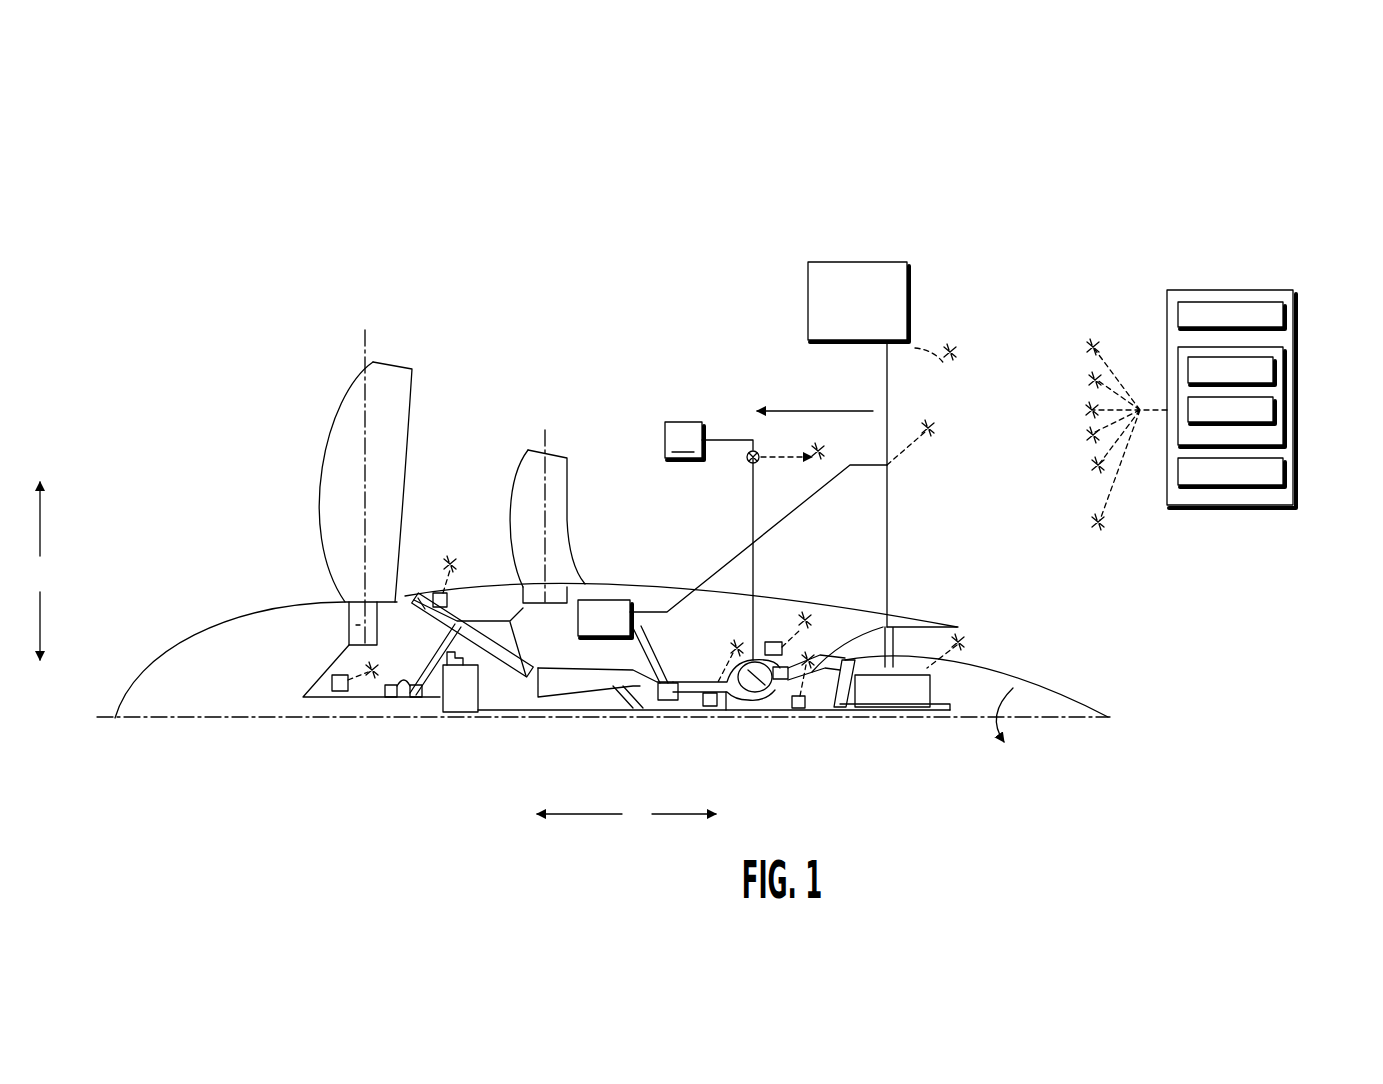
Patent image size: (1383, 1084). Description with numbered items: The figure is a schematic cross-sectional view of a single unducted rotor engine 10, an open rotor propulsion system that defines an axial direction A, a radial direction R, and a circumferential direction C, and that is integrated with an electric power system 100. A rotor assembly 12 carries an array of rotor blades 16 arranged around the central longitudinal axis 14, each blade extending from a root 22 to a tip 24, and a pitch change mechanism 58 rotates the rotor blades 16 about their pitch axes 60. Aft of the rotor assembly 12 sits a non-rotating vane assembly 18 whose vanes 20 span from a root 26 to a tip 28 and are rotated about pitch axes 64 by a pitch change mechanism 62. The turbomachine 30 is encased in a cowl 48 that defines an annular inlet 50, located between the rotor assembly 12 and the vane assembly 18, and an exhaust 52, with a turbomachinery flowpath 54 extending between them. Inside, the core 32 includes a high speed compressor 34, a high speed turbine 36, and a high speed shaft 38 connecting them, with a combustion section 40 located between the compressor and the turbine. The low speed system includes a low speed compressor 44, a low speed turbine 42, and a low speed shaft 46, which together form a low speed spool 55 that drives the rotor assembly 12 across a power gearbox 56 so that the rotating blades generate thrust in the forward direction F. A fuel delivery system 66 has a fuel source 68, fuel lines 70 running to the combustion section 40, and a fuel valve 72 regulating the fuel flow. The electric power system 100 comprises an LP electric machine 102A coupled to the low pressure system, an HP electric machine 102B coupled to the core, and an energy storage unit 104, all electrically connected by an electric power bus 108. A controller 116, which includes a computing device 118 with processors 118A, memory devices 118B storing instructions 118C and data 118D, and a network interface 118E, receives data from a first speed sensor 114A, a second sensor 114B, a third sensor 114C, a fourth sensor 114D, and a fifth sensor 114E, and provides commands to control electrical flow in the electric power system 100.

The electric power system 100 is at (736, 170).
The single unducted rotor engine 10 is at (566, 326).
The rotor assembly 12 is at (260, 513).
The central longitudinal axis 14 is at (305, 720).
The rotor blades 16 is at (318, 477).
The vane assembly 18 is at (656, 376).
The vanes 20 is at (568, 525).
The root 22 is at (342, 600).
The tip 24 is at (387, 475).
The root 26 is at (575, 582).
The tip 28 is at (551, 497).
The turbomachine 30 is at (670, 550).
The core 32 is at (776, 575).
The high speed compressor 34 is at (688, 682).
The high speed turbine 36 is at (790, 690).
The high speed shaft 38 is at (744, 690).
The combustion section 40 is at (758, 676).
The low speed turbine 42 is at (876, 628).
The low speed compressor 44 is at (567, 682).
The low speed shaft 46 is at (680, 708).
The cowl 48 is at (806, 595).
The inlet 50 is at (405, 580).
The exhaust 52 is at (978, 650).
The turbomachinery flowpath 54 is at (507, 681).
The low speed spool 55 is at (726, 710).
The power gearbox 56 is at (458, 704).
The pitch change mechanism 58 is at (356, 625).
The pitch axes 60 is at (356, 348).
The pitch change mechanism 62 is at (513, 588).
The pitch axes 64 is at (530, 442).
The fuel delivery system 66 is at (748, 402).
The fuel source 68 is at (709, 439).
The fuel lines 70 is at (753, 475).
The fuel valve 72 is at (759, 452).
The LP electric machine 102A is at (912, 695).
The HP electric machine 102B is at (628, 650).
The energy storage unit 104 is at (910, 282).
The electric power bus 108 is at (915, 483).
The first speed sensor 114A is at (332, 683).
The second sensor 114B is at (711, 706).
The third sensor 114C is at (769, 642).
The fourth sensor 114D is at (803, 708).
The fifth sensor 114E is at (447, 600).
The controller 116 is at (1280, 268).
The computing device 118 is at (1272, 379).
The processors 118A is at (1283, 318).
The memory devices 118B is at (1283, 360).
The computer-readable instructions 118C is at (1273, 378).
The data 118D is at (1273, 412).
The network interface 118E is at (1283, 478).
The forward direction F is at (822, 410).
The radial direction R is at (40, 571).
The axial direction A is at (626, 815).
The circumferential direction C is at (1006, 738).